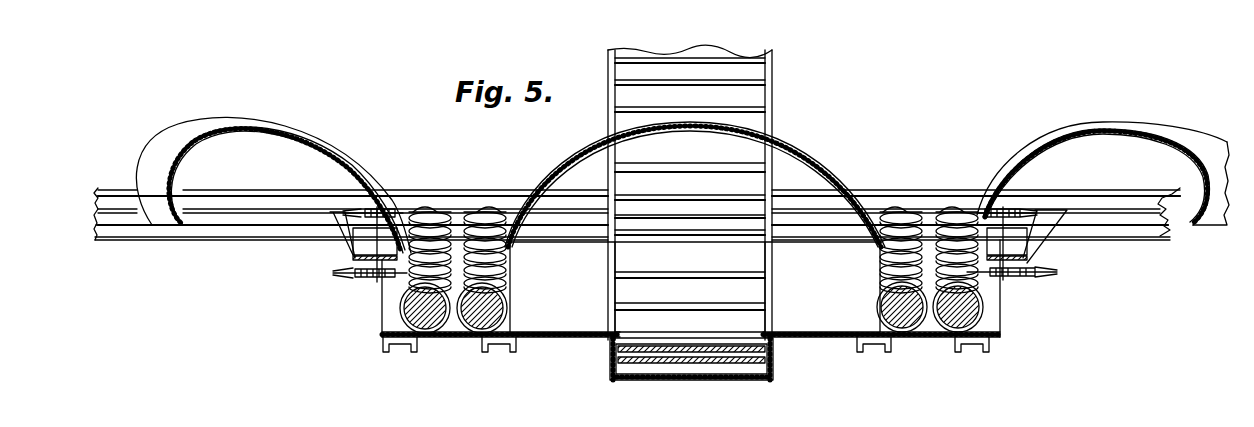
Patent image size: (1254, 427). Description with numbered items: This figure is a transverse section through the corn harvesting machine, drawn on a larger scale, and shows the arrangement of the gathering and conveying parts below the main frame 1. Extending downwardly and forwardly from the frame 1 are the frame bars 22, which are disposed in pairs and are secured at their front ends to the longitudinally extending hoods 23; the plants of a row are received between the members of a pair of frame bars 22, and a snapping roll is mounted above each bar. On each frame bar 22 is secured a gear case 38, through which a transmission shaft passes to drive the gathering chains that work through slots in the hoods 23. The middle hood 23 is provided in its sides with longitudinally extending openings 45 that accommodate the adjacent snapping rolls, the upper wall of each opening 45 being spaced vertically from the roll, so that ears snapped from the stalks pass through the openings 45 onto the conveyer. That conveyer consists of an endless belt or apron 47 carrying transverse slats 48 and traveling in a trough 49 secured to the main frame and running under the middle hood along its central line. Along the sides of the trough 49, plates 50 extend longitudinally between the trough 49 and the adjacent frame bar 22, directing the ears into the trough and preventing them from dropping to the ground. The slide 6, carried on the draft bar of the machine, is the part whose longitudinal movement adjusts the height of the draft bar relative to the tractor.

The frame 1 is at (1147, 232).
The slide 6 is at (383, 308).
The frame bars 22 is at (332, 212).
The hoods 23 is at (310, 124).
The gear case 38 is at (363, 240).
The openings 45 is at (495, 206).
The endless belt or apron 47 is at (753, 325).
The transverse slats 48 is at (712, 308).
The trough 49 is at (777, 380).
The plates 50 is at (691, 288).